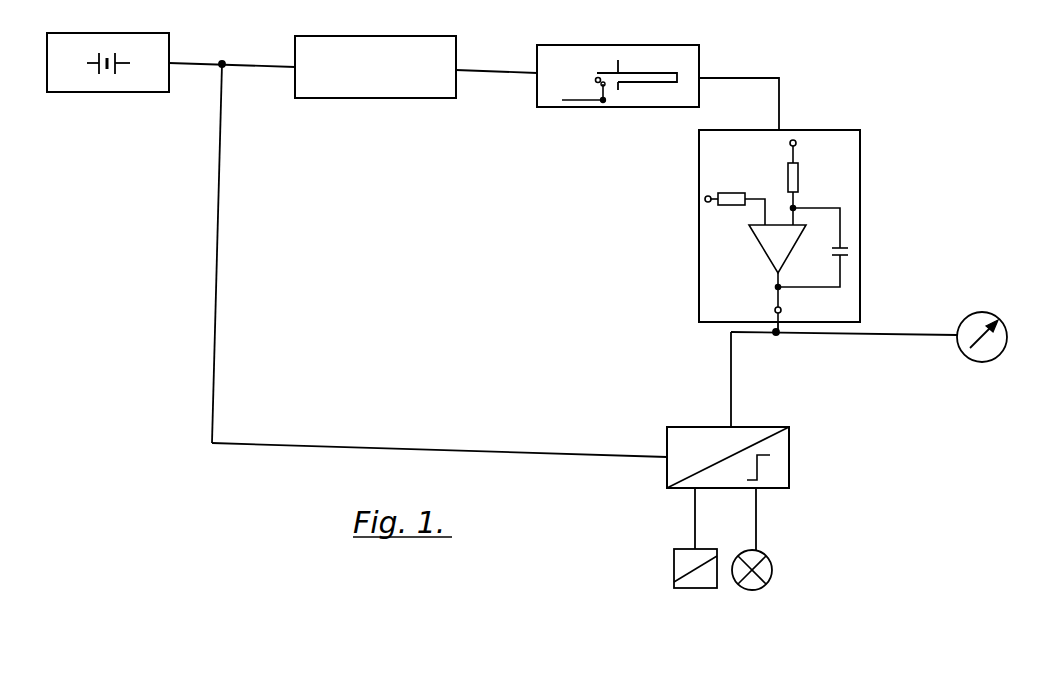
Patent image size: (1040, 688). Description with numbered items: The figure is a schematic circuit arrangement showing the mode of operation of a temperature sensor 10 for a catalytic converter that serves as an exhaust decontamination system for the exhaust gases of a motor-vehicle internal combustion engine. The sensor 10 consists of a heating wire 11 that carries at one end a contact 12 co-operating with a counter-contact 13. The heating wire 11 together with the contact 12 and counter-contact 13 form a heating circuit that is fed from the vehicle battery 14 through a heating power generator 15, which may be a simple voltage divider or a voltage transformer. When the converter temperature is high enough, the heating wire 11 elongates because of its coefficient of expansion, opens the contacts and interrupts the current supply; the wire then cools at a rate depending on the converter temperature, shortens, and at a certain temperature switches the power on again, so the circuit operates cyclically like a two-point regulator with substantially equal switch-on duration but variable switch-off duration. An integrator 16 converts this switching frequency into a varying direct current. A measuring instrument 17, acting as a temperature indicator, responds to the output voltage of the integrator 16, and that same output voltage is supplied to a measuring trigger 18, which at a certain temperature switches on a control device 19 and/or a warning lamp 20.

The temperature sensor 10 is at (618, 104).
The heating wire 11 is at (658, 82).
The contact 12 is at (595, 82).
The counter-contact 13 is at (603, 103).
The vehicle battery 14 is at (120, 92).
The heating power generator 15 is at (407, 99).
The integrator 16 is at (699, 190).
The measuring instrument 17 is at (958, 344).
The measuring trigger 18 is at (789, 468).
The control device 19 is at (697, 588).
The warning lamp 20 is at (755, 590).